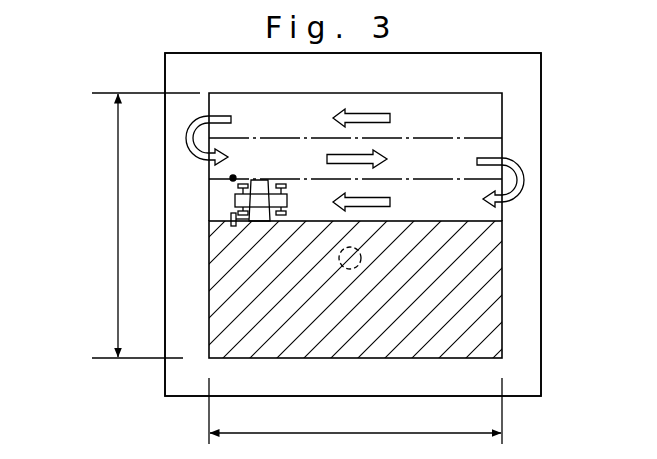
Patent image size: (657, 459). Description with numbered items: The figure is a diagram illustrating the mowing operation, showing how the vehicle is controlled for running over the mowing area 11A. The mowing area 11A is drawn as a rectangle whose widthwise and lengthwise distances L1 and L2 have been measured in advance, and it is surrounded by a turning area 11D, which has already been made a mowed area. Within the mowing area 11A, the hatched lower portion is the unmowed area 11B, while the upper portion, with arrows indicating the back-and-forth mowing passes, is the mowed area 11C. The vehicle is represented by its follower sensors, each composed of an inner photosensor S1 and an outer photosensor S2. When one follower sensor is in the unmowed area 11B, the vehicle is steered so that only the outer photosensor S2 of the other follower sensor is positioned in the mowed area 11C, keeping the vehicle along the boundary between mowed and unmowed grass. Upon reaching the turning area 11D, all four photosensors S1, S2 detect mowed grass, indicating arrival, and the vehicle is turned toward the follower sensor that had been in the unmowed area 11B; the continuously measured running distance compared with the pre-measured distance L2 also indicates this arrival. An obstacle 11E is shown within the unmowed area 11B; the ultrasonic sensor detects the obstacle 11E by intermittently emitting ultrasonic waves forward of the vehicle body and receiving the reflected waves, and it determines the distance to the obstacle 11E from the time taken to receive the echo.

The mowing area 11A is at (164, 157).
The unmowed area 11B is at (466, 291).
The mowed area 11C is at (463, 124).
The turning area 11D is at (194, 269).
The obstacle 11E is at (358, 268).
The photosensor S1 is at (231, 214).
The photosensor S2 is at (233, 178).
The widthwise distance L1 is at (141, 225).
The lengthwise distance L2 is at (355, 411).